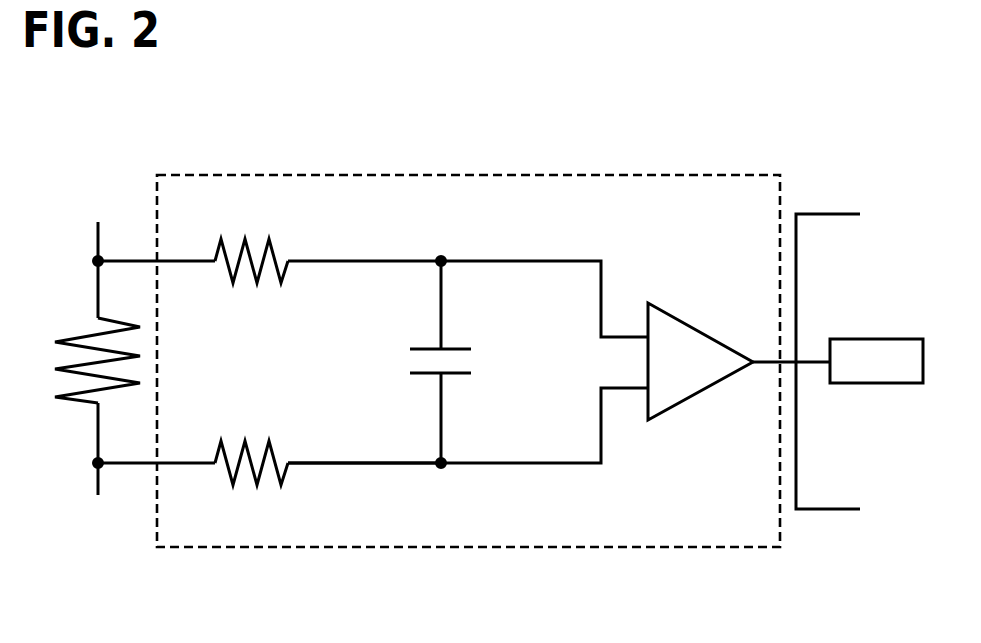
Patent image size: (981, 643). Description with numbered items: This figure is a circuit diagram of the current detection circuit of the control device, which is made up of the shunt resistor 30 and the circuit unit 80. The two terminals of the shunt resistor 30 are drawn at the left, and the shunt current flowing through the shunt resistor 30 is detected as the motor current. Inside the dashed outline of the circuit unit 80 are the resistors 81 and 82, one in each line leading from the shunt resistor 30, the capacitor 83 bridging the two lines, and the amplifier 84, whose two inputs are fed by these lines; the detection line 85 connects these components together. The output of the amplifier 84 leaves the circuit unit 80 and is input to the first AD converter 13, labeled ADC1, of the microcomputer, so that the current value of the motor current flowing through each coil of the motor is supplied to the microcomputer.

The circuit unit 80 is at (213, 175).
The resistor 81 is at (270, 240).
The resistor 82 is at (233, 485).
The capacitor 83 is at (458, 374).
The amplifier 84 is at (680, 405).
The detection line 85 is at (389, 463).
The shunt resistor 30 is at (86, 334).
The first AD converter 13 is at (863, 339).